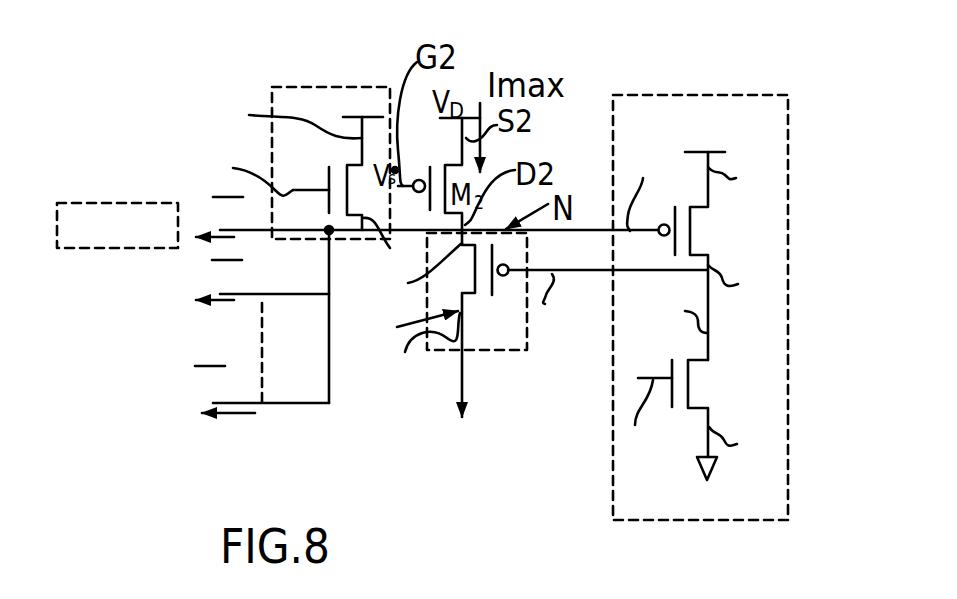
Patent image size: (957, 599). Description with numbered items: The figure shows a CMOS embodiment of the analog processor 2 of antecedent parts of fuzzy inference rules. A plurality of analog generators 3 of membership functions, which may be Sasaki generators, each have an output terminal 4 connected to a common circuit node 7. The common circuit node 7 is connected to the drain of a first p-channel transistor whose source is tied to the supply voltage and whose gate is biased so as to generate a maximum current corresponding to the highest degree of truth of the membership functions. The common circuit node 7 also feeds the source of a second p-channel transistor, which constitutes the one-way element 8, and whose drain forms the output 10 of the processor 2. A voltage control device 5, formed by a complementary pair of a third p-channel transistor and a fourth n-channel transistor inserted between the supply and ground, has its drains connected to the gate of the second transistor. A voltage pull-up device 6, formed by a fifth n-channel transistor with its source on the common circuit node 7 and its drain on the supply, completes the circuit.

The analog processor 2 is at (751, 260).
The analog generator 3 is at (141, 250).
The output terminal 4 is at (290, 297).
The voltage control device 5 is at (733, 93).
The voltage pull-up device 6 is at (322, 84).
The common circuit node 7 is at (334, 235).
The one-way element 8 is at (503, 324).
The output 10 is at (472, 390).